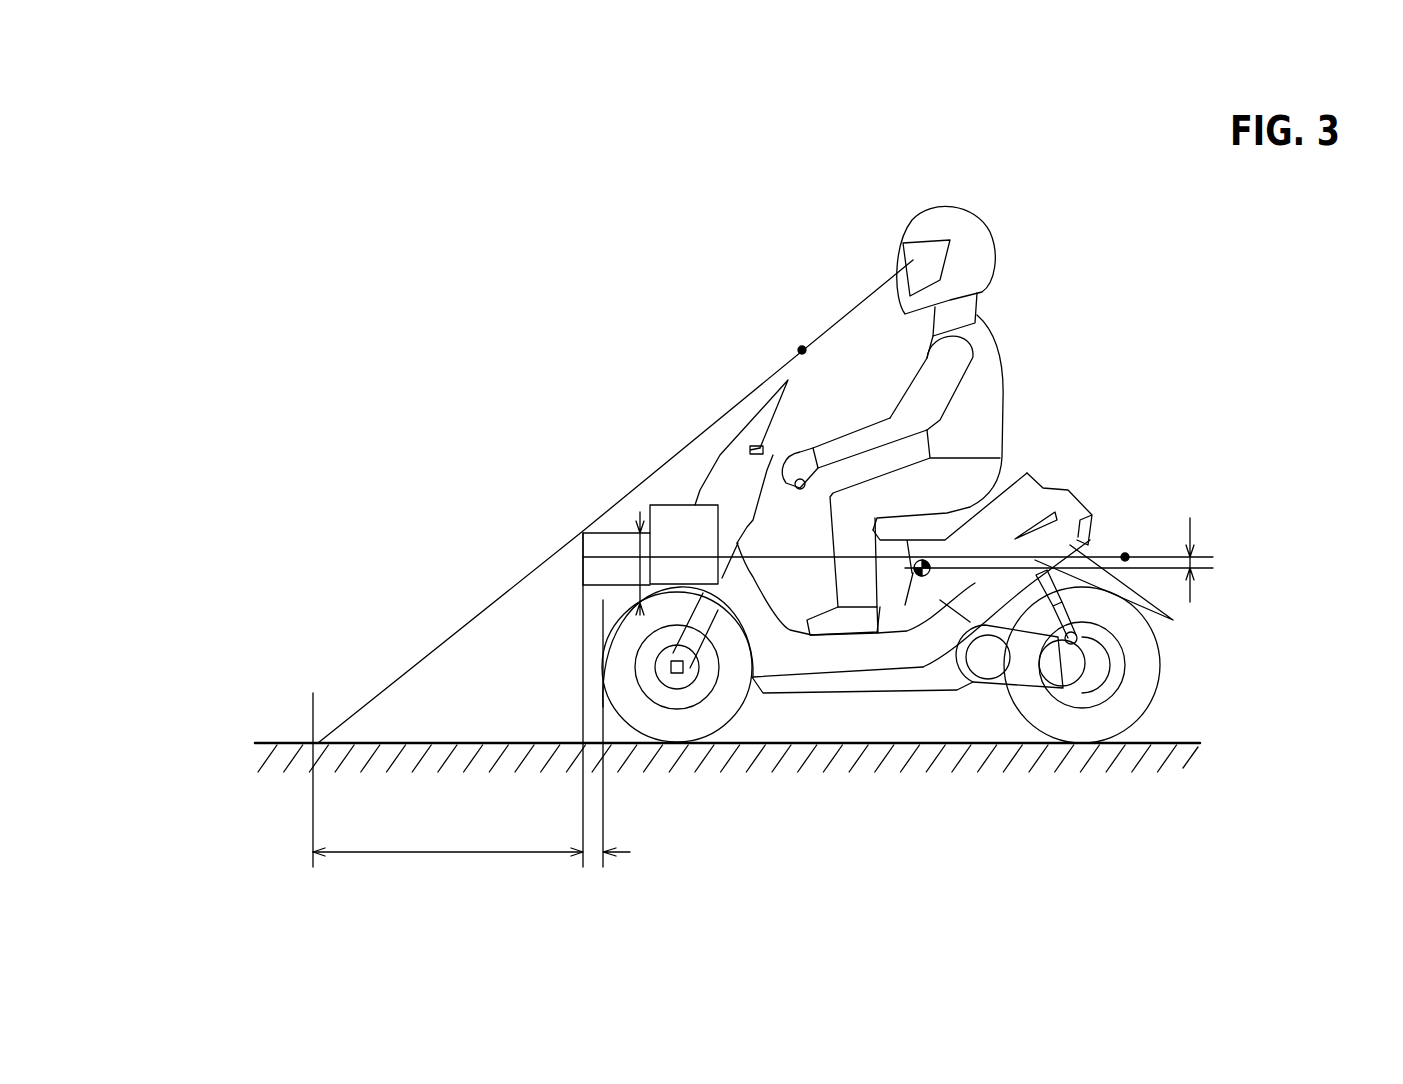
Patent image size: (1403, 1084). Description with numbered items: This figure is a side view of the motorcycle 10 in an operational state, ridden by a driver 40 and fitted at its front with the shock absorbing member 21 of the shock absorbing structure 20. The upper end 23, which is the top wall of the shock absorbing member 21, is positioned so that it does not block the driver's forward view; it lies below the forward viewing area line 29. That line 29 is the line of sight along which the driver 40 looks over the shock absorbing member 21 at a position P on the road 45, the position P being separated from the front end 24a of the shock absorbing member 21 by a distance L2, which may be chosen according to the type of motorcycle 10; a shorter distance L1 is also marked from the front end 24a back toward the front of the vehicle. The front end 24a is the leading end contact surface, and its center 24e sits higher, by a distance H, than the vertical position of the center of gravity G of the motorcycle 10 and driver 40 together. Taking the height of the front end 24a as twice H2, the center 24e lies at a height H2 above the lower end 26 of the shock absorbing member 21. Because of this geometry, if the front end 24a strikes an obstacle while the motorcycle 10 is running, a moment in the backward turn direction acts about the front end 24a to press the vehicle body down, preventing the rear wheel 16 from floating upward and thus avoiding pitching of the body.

The motorcycle 10 is at (948, 616).
The rear wheel 16 is at (1145, 675).
The vehicle-mounted device 20 is at (574, 432).
The shock absorbing member 21 is at (691, 491).
The upper end 23 is at (645, 518).
The front end 24a is at (565, 548).
The center of the front end 24e is at (1125, 553).
The lower end 26 is at (583, 590).
The forward viewing area line 29 is at (802, 350).
The driver 40 is at (985, 348).
The road 45 is at (285, 743).
The position on the road P is at (313, 761).
The center of gravity G is at (922, 576).
The distance H is at (912, 560).
The height H2 is at (650, 515).
The distance L1 is at (606, 750).
The distance L2 is at (448, 714).